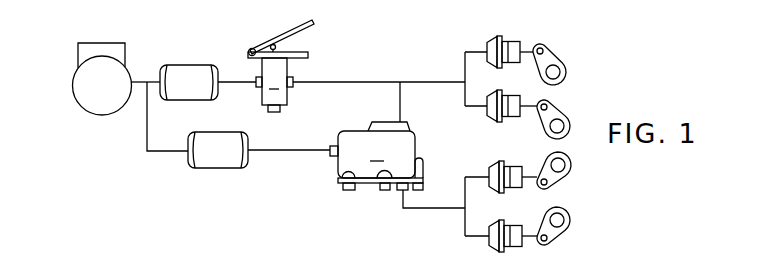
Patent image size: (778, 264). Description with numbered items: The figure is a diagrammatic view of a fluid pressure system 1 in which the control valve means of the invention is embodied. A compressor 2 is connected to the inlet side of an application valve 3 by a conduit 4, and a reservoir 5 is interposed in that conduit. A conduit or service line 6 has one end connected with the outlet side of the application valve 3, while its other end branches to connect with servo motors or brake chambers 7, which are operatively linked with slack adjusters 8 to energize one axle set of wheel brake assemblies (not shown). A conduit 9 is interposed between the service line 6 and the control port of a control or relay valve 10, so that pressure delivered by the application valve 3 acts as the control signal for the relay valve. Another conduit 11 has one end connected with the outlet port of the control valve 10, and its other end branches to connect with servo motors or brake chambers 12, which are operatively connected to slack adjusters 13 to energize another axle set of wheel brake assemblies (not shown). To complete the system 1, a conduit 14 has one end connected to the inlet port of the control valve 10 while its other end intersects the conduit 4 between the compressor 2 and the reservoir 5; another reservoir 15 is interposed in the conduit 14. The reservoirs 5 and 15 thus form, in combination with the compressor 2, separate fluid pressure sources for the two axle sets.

The fluid pressure system 1 is at (80, 130).
The compressor 2 is at (78, 58).
The application valve 3 is at (281, 66).
The conduit 4 is at (237, 79).
The reservoir 5 is at (192, 65).
The conduit or service line 6 is at (353, 80).
The servo motors or brake chambers 7 is at (503, 68).
The slack adjusters 8 is at (566, 79).
The conduit 9 is at (400, 100).
The control or relay valve 10 is at (376, 156).
The conduit 11 is at (432, 210).
The servo motors or brake chambers 12 is at (503, 191).
The slack adjusters 13 is at (564, 178).
The conduit 14 is at (288, 152).
The reservoir 15 is at (219, 168).